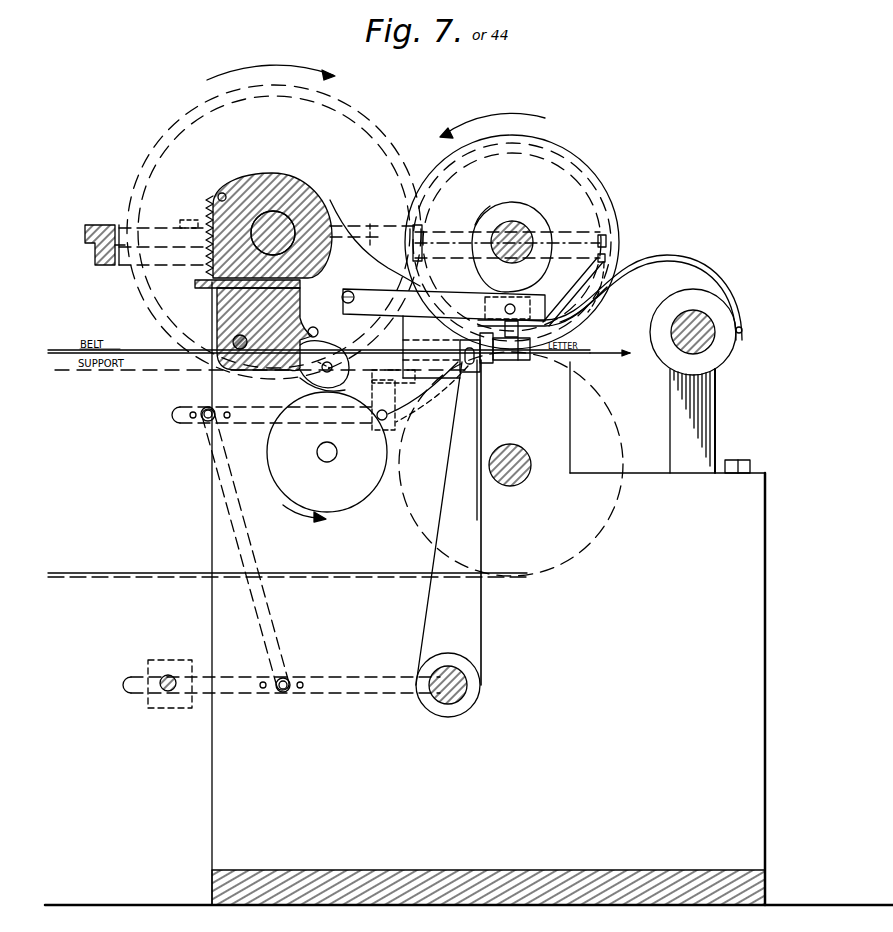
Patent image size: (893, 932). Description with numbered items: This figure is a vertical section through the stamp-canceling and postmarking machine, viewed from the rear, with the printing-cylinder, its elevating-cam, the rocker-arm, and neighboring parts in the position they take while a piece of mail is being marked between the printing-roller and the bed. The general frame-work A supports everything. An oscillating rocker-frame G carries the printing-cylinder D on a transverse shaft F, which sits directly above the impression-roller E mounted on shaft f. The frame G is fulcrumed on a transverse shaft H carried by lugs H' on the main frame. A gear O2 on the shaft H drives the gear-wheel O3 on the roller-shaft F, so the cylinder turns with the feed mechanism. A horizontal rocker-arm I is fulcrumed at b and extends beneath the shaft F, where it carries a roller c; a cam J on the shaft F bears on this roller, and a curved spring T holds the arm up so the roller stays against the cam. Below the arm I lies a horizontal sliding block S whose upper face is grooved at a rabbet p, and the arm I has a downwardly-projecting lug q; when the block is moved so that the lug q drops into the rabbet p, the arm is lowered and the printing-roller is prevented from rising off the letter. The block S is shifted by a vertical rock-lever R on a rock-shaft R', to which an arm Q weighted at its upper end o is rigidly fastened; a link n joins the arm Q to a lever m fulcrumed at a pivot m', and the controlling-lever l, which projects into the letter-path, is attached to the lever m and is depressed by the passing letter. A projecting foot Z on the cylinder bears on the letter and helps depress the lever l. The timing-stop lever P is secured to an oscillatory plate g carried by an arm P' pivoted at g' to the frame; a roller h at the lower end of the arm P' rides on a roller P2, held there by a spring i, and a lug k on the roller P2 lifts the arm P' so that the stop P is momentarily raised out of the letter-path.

The frame-work A is at (469, 593).
The gear O2 is at (274, 222).
The gear-wheel O3 is at (488, 150).
The printing-cylinder D is at (512, 233).
The cam J is at (493, 230).
The transverse shaft F is at (525, 230).
The transverse shaft H is at (272, 216).
The spring i is at (206, 234).
The lugs H' is at (375, 232).
The rocker-frame G is at (102, 226).
The arm P' is at (244, 325).
The pivot g' is at (215, 339).
The oscillatory plate g is at (322, 321).
The lever P is at (332, 347).
The roller h is at (335, 378).
The rocker-arm I is at (444, 305).
The fulcrum b is at (348, 291).
The roller c is at (520, 306).
The lug q is at (573, 292).
The rabbet p is at (512, 338).
The sliding block S is at (525, 360).
The projecting foot Z is at (595, 320).
The curved spring T is at (672, 256).
The controlling-lever l is at (428, 392).
The pivot m' is at (407, 407).
The lever m is at (272, 416).
The lug k is at (262, 455).
The roller P2 is at (327, 457).
The impression-roller E is at (511, 464).
The shaft f is at (516, 465).
The link n is at (287, 560).
The rock-lever R is at (448, 522).
The rock-shaft R' is at (459, 697).
The arm Q is at (362, 694).
The weight o is at (170, 696).